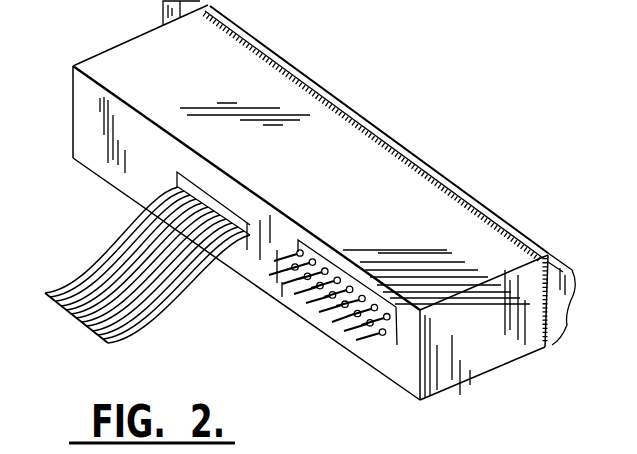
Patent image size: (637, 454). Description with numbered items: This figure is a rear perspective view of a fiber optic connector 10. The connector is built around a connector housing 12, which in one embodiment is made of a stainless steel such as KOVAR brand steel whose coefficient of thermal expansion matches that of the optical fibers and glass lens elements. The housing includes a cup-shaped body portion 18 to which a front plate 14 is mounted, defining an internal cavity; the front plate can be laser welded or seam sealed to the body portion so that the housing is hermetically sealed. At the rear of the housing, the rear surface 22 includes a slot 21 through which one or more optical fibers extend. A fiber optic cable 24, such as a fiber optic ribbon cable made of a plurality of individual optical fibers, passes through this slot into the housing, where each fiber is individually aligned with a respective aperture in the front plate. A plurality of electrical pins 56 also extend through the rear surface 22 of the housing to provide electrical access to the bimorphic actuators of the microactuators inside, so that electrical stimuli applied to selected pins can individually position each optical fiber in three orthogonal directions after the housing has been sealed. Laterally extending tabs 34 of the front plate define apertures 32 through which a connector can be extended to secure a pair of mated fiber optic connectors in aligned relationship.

The fiber optic connector 10 is at (476, 158).
The connector housing 12 is at (108, 60).
The front plate 14 is at (381, 128).
The cup-shaped body portion 18 is at (213, 68).
The slot 21 is at (247, 251).
The rear surface 22 is at (107, 156).
The fiber optic cable 24 is at (83, 333).
The apertures 32 is at (547, 316).
The laterally extending tabs 34 is at (161, 12).
The electrical pins 56 is at (397, 340).